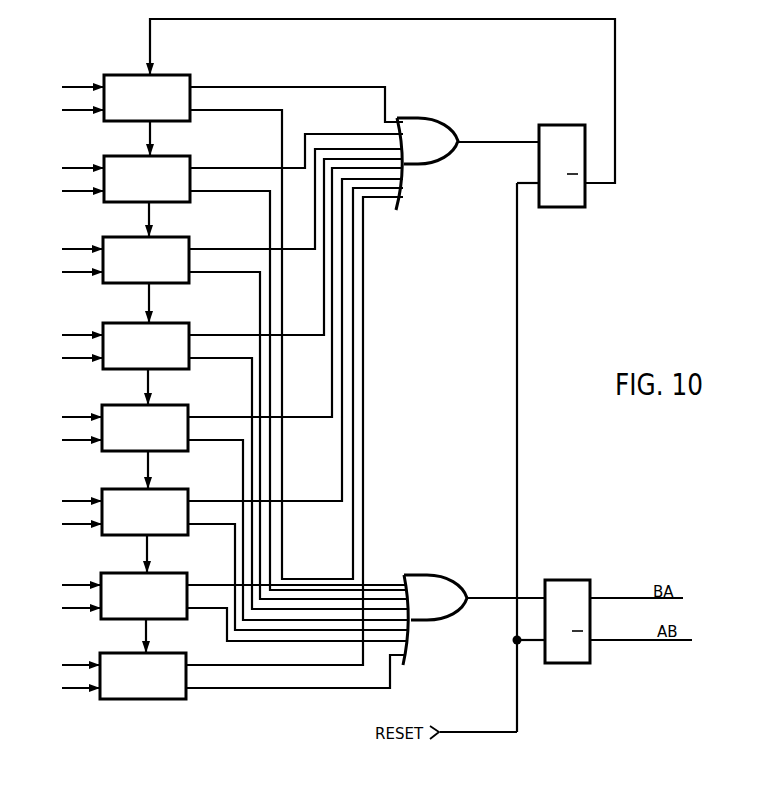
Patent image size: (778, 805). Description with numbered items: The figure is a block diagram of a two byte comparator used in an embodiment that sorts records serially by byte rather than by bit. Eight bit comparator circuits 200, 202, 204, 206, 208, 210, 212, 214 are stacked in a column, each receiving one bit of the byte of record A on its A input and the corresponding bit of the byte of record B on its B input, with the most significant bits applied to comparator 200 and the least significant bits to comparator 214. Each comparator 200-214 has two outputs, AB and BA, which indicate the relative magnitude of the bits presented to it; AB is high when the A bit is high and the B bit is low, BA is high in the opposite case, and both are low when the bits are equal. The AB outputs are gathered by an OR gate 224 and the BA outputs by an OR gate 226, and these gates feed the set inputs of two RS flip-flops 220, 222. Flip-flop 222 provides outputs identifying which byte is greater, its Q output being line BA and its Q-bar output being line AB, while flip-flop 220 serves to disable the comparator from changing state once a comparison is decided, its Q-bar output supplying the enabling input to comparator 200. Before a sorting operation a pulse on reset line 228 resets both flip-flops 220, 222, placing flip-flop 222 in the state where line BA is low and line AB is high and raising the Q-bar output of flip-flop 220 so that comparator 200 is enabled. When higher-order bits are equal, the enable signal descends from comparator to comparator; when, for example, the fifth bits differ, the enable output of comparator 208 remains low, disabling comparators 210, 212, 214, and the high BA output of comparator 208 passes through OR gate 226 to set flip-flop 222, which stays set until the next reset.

The bit comparator circuit 200 is at (125, 90).
The bit comparator circuit 202 is at (122, 173).
The bit comparator circuit 204 is at (122, 267).
The bit comparator circuit 206 is at (121, 343).
The bit comparator circuit 208 is at (120, 427).
The bit comparator circuit 210 is at (117, 510).
The bit comparator circuit 212 is at (118, 598).
The bit comparator circuit 214 is at (120, 680).
The RS flip-flop 220 is at (582, 198).
The RS flip-flop 222 is at (570, 595).
The OR gate 224 is at (422, 150).
The OR gate 226 is at (428, 595).
The reset line 228 is at (517, 420).